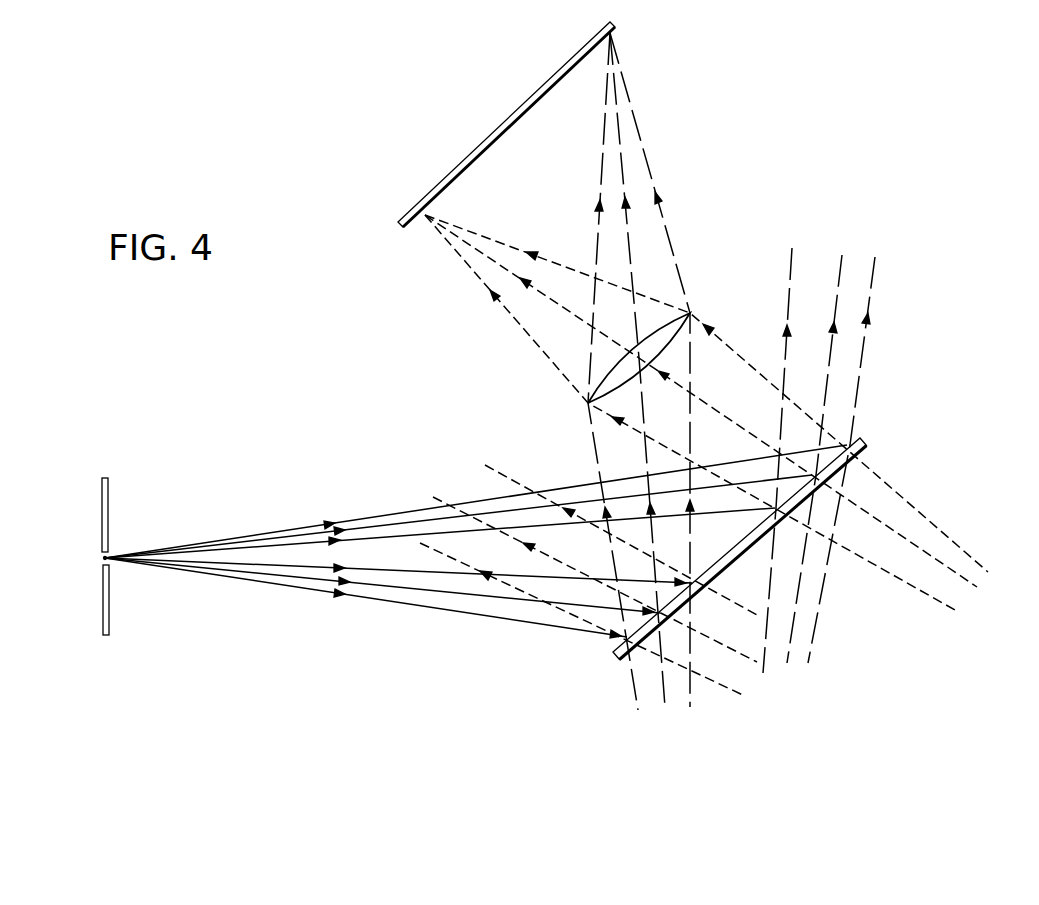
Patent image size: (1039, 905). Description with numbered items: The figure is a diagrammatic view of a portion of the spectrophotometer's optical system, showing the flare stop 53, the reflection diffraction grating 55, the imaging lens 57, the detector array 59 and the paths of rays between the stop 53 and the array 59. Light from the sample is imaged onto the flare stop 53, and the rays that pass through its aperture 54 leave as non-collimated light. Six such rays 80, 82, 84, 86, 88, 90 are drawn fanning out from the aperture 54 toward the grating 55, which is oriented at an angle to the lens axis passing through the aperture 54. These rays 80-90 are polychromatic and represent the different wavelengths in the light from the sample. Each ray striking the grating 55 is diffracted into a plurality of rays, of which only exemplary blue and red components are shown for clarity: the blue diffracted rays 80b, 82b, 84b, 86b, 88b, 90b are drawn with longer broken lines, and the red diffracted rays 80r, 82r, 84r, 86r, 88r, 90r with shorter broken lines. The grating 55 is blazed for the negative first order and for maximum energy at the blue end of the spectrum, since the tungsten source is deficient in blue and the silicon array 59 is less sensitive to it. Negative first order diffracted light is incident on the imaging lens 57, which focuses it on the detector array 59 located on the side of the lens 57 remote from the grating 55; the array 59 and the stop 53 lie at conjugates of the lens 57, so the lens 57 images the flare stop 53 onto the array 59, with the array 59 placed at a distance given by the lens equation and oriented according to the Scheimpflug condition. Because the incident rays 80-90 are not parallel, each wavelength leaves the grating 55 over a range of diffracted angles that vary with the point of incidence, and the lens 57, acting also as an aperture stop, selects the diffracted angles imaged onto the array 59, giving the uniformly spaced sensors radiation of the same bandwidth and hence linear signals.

The flare stop 53 is at (110, 520).
The aperture 54 is at (112, 562).
The reflection diffraction grating 55 is at (733, 553).
The imaging lens 57 is at (663, 337).
The detector array 59 is at (478, 148).
The ray 80 is at (323, 522).
The ray 82 is at (383, 537).
The ray 84 is at (353, 528).
The ray 86 is at (420, 571).
The ray 88 is at (440, 592).
The ray 90 is at (430, 607).
The red diffracted ray 80r is at (742, 357).
The red diffracted ray 82r is at (697, 397).
The red diffracted ray 84r is at (668, 446).
The red diffracted ray 86r is at (505, 478).
The red diffracted ray 88r is at (537, 550).
The red diffracted ray 90r is at (440, 550).
The blue diffracted ray 80b is at (867, 332).
The blue diffracted ray 82b is at (833, 305).
The blue diffracted ray 84b is at (793, 262).
The blue diffracted ray 86b is at (693, 410).
The blue diffracted ray 88b is at (647, 446).
The blue diffracted ray 90b is at (593, 433).